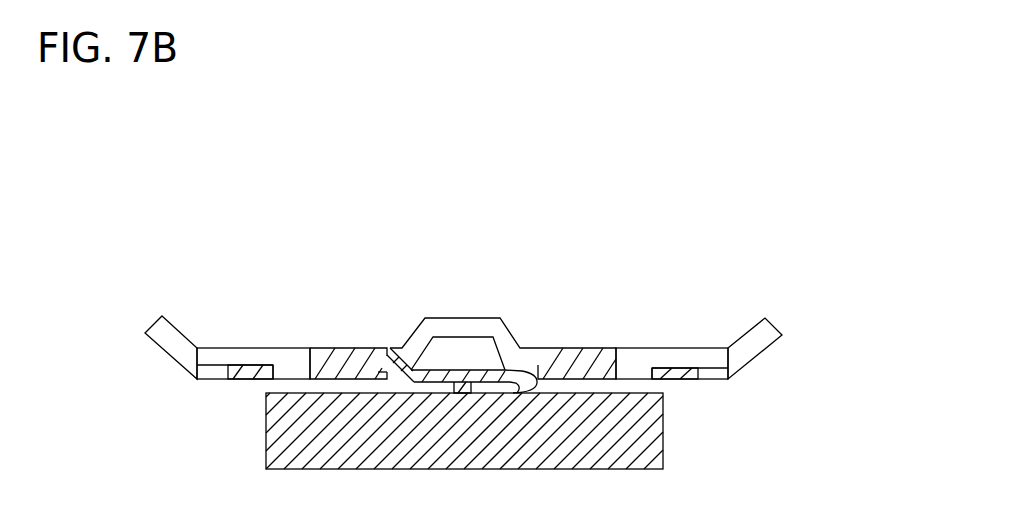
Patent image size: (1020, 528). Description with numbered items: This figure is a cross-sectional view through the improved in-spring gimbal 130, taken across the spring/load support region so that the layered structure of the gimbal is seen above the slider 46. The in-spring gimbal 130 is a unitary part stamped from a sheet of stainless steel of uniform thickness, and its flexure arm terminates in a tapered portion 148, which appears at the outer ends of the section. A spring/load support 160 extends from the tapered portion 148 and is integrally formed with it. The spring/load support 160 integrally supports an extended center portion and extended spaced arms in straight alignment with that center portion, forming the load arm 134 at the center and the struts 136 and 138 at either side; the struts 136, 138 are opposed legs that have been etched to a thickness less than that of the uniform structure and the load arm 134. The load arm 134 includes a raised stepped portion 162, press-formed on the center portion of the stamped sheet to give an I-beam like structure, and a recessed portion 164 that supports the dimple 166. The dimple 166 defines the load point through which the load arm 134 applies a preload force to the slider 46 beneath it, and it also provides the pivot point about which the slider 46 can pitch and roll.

The in-spring gimbal 130 is at (570, 141).
The slider 46 is at (660, 433).
The tapered portion 148 is at (155, 323).
The spring/load support 160 is at (287, 347).
The strut 138 is at (256, 344).
The load arm 134 is at (357, 347).
The raised stepped portion 162 is at (505, 322).
The recessed portion 164 is at (472, 335).
The dimple 166 is at (538, 368).
The strut 136 is at (682, 344).